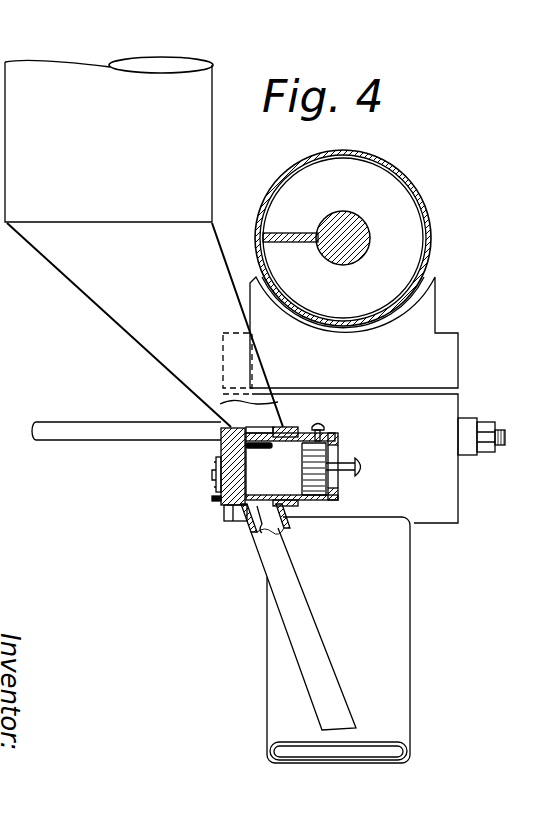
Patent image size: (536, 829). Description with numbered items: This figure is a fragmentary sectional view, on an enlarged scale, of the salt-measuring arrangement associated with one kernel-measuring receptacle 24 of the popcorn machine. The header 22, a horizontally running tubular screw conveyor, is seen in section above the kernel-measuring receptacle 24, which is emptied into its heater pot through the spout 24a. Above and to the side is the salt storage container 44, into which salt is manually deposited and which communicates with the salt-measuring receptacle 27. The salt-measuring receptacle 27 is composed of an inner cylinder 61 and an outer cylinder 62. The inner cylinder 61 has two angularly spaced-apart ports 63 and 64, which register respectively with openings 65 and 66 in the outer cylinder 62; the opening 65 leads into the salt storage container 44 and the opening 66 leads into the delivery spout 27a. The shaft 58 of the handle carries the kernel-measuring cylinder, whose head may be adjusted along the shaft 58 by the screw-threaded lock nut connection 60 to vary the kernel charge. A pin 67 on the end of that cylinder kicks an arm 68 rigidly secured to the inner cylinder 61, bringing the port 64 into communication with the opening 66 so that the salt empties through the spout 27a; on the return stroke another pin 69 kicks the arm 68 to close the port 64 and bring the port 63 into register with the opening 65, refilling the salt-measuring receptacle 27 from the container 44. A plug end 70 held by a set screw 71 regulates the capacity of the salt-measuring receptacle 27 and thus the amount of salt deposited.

The salt storage container 44 is at (144, 242).
The header 22 is at (421, 191).
The kernel-measuring receptacle 24 is at (461, 504).
The spout 24a is at (413, 599).
The salt-measuring receptacle 27 is at (318, 505).
The spout 27a is at (300, 637).
The shaft 58 is at (150, 438).
The screw-threaded lock nut connection 60 is at (481, 419).
The inner cylinder 61 is at (222, 450).
The outer cylinder 62 is at (234, 523).
The port 63 is at (253, 448).
The port 64 is at (259, 494).
The opening 65 is at (263, 427).
The opening 66 is at (262, 534).
The pin 67 is at (216, 476).
The arm 68 is at (218, 486).
The pin 69 is at (216, 502).
The plug end 70 is at (349, 463).
The set screw 71 is at (323, 426).